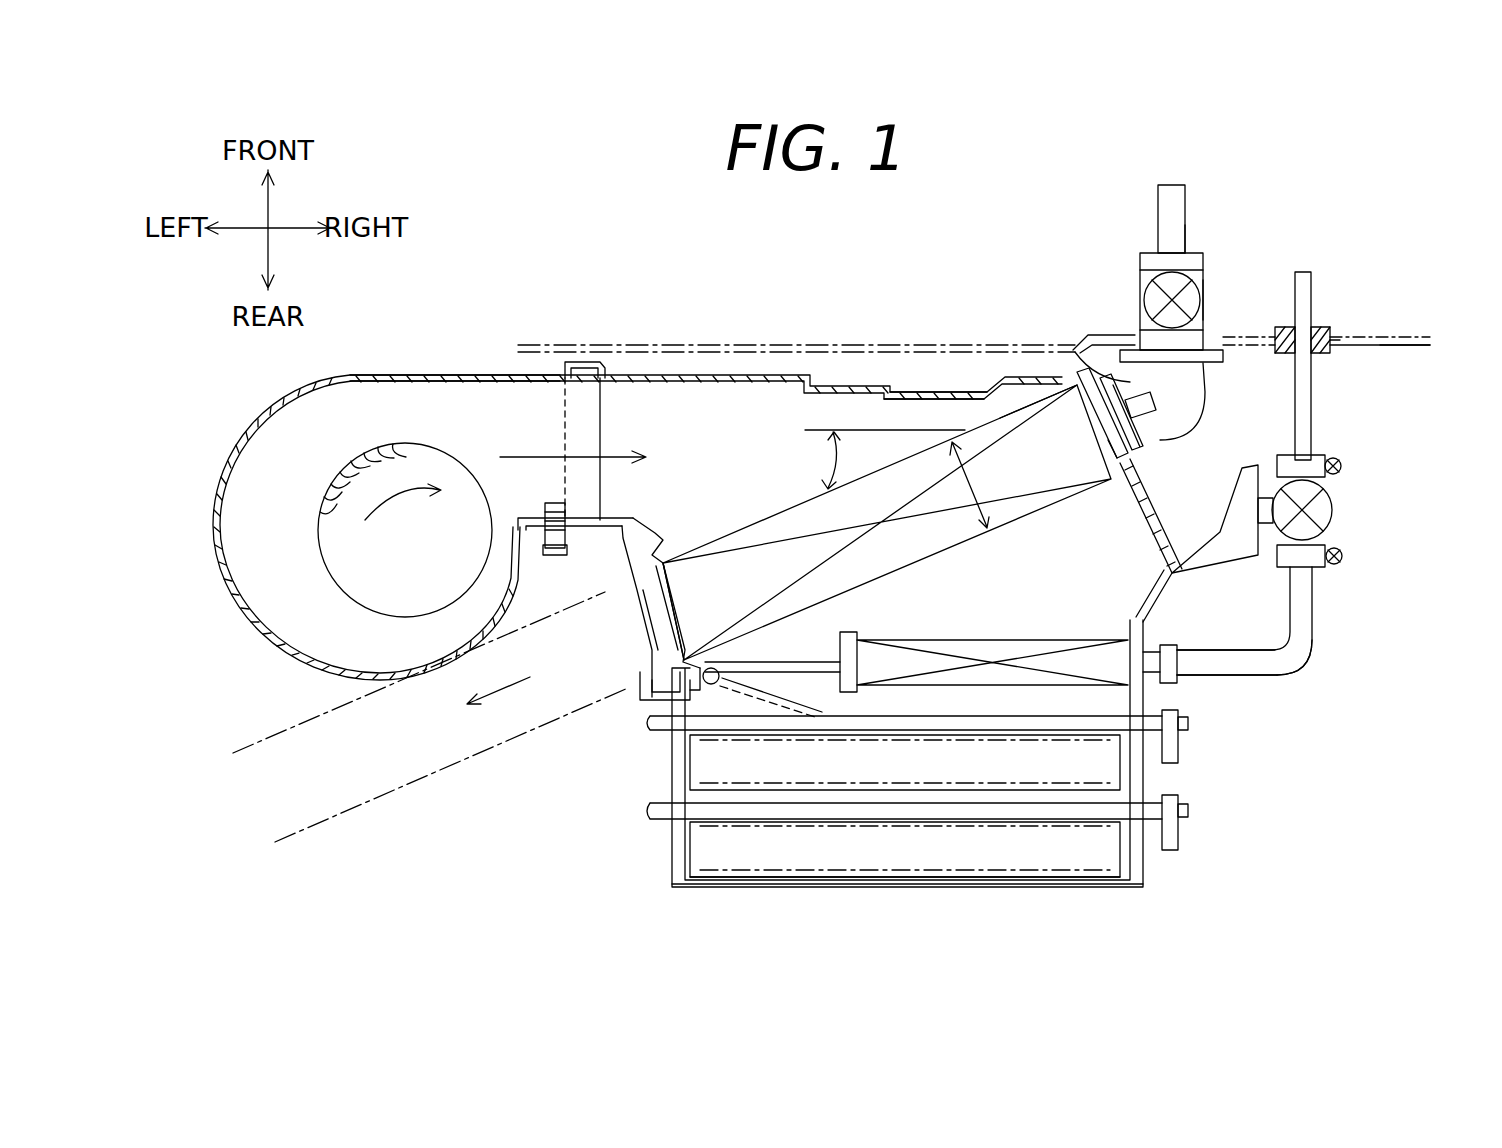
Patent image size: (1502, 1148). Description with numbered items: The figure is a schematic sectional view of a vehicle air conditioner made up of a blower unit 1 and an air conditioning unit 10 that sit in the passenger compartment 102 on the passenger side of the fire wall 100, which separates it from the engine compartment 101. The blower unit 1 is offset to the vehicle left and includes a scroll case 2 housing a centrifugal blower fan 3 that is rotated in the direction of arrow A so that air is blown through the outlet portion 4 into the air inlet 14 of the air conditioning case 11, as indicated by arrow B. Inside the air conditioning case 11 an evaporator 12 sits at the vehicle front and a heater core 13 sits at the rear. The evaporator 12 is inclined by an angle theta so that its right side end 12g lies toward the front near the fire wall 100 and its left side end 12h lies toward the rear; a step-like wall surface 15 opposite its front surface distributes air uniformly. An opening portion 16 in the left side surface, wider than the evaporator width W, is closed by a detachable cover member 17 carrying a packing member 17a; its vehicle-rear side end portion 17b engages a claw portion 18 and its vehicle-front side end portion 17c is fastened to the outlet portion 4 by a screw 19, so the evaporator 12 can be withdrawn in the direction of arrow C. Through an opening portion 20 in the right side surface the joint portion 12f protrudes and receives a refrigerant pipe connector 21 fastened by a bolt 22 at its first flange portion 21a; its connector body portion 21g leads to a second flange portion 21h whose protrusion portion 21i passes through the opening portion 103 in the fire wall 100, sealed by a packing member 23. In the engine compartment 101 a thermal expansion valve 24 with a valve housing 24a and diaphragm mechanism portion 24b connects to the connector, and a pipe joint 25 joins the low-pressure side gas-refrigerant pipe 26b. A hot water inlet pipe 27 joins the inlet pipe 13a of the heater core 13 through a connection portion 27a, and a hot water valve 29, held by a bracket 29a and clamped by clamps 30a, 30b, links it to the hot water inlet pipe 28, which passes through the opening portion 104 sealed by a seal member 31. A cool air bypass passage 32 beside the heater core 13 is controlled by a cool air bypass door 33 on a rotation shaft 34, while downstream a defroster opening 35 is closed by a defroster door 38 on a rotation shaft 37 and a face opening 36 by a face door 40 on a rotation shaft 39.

The blower unit 1 is at (246, 644).
The scroll case 2 is at (243, 440).
The centrifugal blower fan 3 is at (355, 450).
The outlet portion 4 is at (607, 430).
The air conditioning unit 10 is at (913, 378).
The air conditioning case 11 is at (762, 375).
The evaporator 12 is at (880, 485).
The joint portion 12f is at (1128, 445).
The right side end 12g is at (1042, 430).
The left side end 12h is at (722, 600).
The heater core 13 is at (1150, 640).
The inlet pipe 13a is at (1170, 688).
The air inlet 14 is at (567, 360).
The step-like wall surface 15 is at (932, 408).
The opening portion 16 is at (676, 530).
The cover member 17 is at (625, 595).
The packing member 17a is at (650, 640).
The vehicle-rear side end portion 17b is at (640, 700).
The vehicle-front side end portion 17c is at (590, 543).
The claw portion 18 is at (652, 702).
The screw 19 is at (552, 548).
The opening portion 20 is at (1135, 545).
The refrigerant pipe connector 21 is at (1100, 405).
The first flange portion 21a is at (1110, 445).
The connector body portion 21g is at (1185, 392).
The second flange portion 21h is at (1218, 356).
The protrusion portion 21i is at (1140, 385).
The bolt 22 is at (1160, 412).
The packing member 23 is at (1215, 352).
The thermal expansion valve 24 is at (1203, 270).
The valve housing 24a is at (1203, 300).
The diaphragm mechanism portion 24b is at (1142, 262).
The pipe joint 25 is at (1203, 228).
The low-pressure side gas-refrigerant pipe 26b is at (1158, 213).
The hot water inlet pipe 27 is at (1290, 665).
The connection portion 27a is at (1262, 700).
The hot water inlet pipe 28 is at (1311, 395).
The hot water valve 29 is at (1333, 508).
The bracket 29a is at (1250, 520).
The clamp 30a is at (1322, 570).
The clamp 30b is at (1322, 458).
The seal member 31 is at (1318, 330).
The cool air bypass passage 32 is at (835, 640).
The cool air bypass door 33 is at (690, 852).
The rotation shaft 34 is at (705, 702).
The defroster opening 35 is at (896, 798).
The face opening 36 is at (972, 878).
The rotation shaft 37 is at (1165, 742).
The defroster door 38 is at (833, 800).
The rotation shaft 39 is at (1097, 810).
The face door 40 is at (1030, 882).
The fire wall 100 is at (1420, 340).
The engine compartment 101 is at (1405, 332).
The passenger compartment 102 is at (1400, 353).
The opening portion 103 is at (1212, 340).
The opening portion 104 is at (1330, 345).